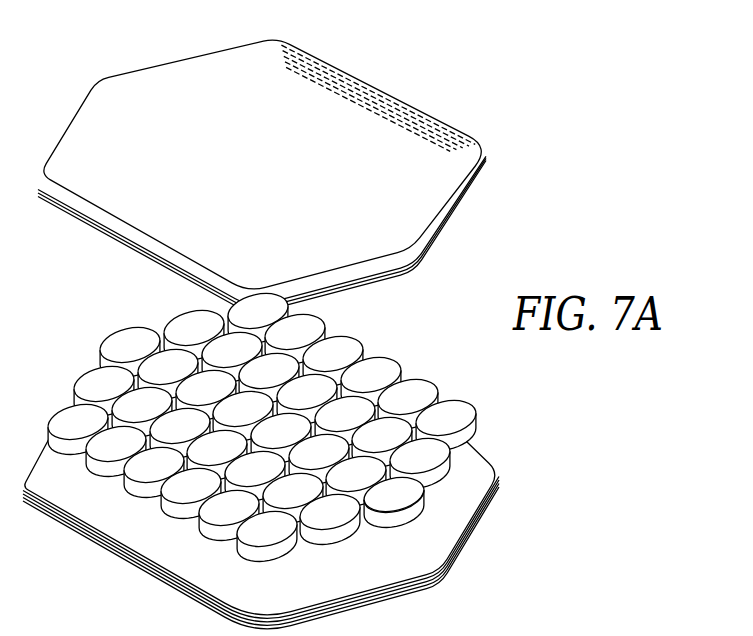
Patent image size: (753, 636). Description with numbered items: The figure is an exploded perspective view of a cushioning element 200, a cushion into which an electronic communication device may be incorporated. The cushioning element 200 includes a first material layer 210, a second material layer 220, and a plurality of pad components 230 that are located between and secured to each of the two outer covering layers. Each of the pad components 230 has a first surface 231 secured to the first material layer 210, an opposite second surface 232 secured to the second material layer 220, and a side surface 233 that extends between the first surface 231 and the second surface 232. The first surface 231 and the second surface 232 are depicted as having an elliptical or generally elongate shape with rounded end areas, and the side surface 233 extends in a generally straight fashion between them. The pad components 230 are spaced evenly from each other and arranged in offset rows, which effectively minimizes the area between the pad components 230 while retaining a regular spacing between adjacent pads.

The cushioning element 200 is at (441, 99).
The first material layer 210 is at (190, 56).
The second material layer 220 is at (360, 594).
The pad components 230 is at (133, 333).
The first surface 231 is at (70, 410).
The second surface 232 is at (72, 450).
The side surface 233 is at (48, 428).